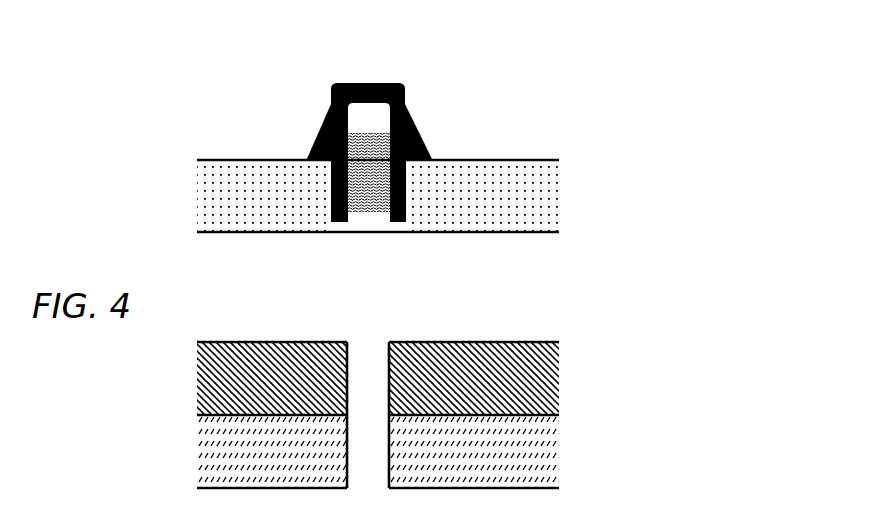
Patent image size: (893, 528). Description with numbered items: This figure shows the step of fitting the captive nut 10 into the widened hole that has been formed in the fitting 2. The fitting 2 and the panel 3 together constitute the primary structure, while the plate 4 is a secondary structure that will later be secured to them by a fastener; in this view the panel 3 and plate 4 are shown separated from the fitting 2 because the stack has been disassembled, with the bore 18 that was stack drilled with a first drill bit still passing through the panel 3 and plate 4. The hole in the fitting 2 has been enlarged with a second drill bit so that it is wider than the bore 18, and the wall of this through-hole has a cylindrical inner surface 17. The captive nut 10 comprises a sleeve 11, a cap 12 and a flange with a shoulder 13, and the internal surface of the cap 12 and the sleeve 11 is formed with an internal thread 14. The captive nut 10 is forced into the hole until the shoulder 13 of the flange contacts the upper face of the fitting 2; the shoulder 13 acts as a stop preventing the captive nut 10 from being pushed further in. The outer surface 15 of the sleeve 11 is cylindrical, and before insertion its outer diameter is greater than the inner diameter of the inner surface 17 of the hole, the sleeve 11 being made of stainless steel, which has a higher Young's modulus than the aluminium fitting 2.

The fitting 2 is at (207, 193).
The panel 3 is at (206, 376).
The plate 4 is at (206, 449).
The captive nut 10 is at (292, 110).
The sleeve 11 is at (337, 222).
The cap 12 is at (403, 90).
The shoulder 13 is at (317, 162).
The internal thread 14 is at (372, 195).
The outer surface 15 is at (407, 187).
The inner surface 17 is at (406, 225).
The bore 18 is at (382, 423).